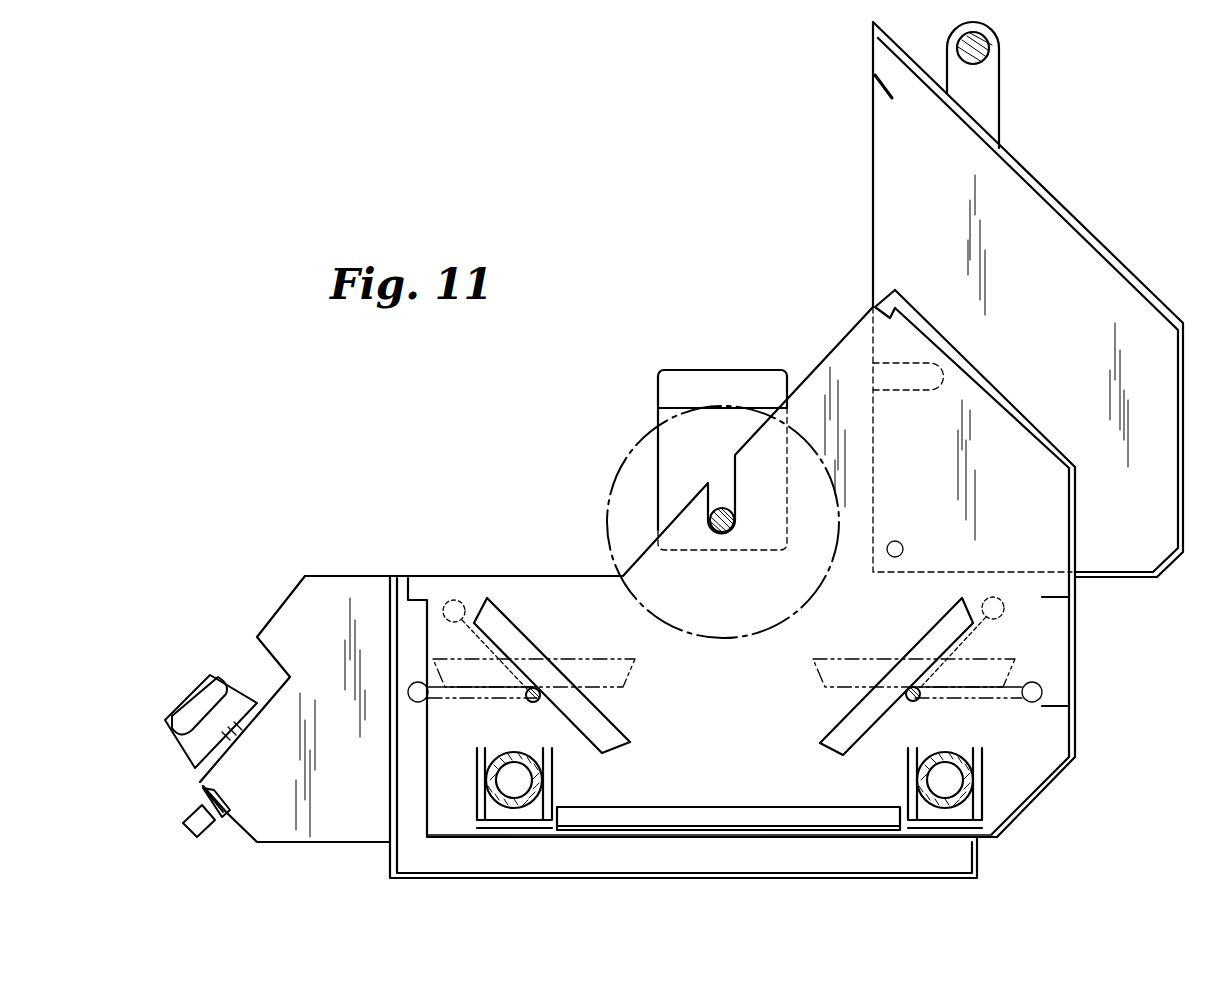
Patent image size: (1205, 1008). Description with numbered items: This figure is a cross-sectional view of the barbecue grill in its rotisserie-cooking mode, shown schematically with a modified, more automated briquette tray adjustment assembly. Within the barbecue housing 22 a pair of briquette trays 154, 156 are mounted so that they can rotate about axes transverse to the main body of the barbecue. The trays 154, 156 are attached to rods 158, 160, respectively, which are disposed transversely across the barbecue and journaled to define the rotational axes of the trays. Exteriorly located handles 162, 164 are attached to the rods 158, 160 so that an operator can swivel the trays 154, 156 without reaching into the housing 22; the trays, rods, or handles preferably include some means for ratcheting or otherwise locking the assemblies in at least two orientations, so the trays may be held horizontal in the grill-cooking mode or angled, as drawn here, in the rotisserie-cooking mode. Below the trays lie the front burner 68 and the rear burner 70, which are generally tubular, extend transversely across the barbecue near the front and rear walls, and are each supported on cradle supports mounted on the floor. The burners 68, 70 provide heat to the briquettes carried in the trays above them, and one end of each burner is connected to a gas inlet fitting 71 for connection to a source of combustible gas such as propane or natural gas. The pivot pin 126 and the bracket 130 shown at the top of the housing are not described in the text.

The barbecue housing 22 is at (1082, 728).
The front burner 68 is at (483, 780).
The rear burner 70 is at (973, 772).
The gas inlet fitting 71 is at (203, 827).
The pivot pin 126 is at (708, 528).
The hinge bracket 130 is at (610, 488).
The briquette tray 154 is at (508, 617).
The briquette tray 156 is at (938, 620).
The rod 158 is at (530, 702).
The rod 160 is at (915, 702).
The handle 162 is at (453, 600).
The handle 164 is at (1004, 610).